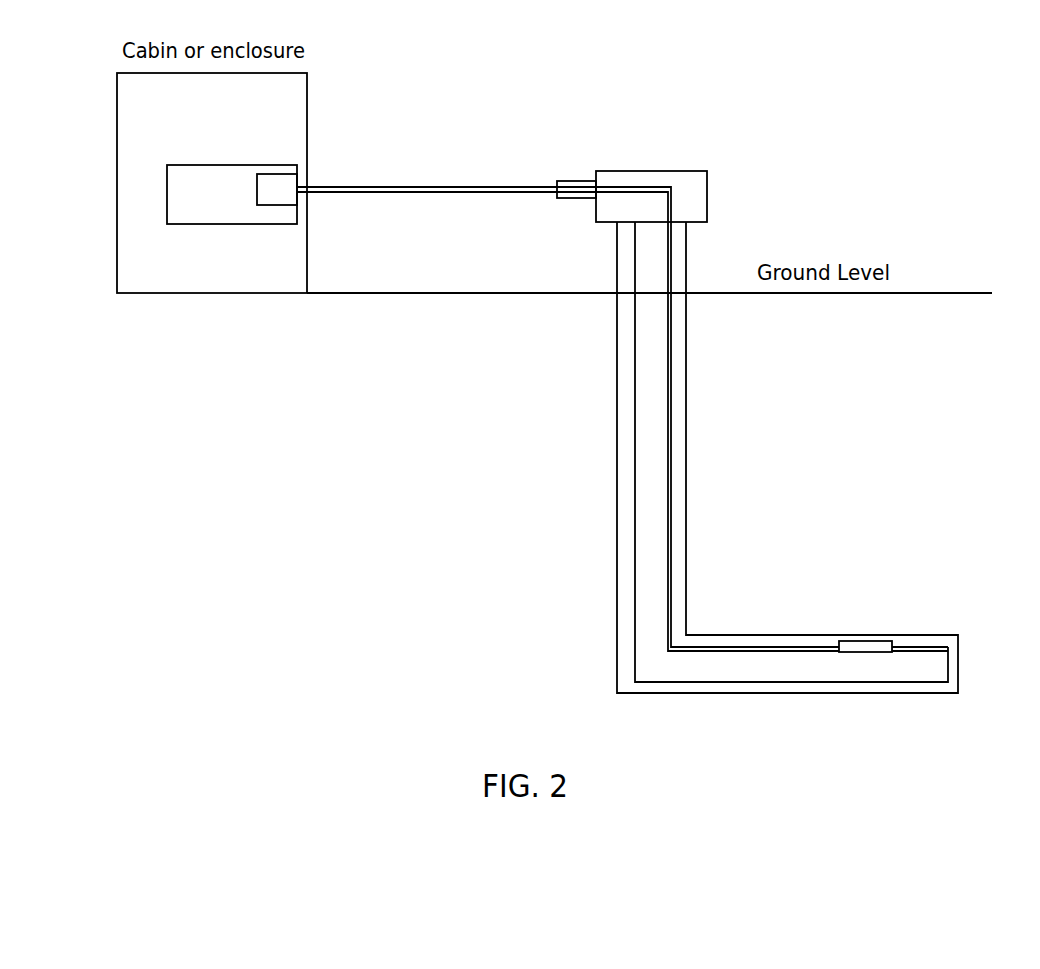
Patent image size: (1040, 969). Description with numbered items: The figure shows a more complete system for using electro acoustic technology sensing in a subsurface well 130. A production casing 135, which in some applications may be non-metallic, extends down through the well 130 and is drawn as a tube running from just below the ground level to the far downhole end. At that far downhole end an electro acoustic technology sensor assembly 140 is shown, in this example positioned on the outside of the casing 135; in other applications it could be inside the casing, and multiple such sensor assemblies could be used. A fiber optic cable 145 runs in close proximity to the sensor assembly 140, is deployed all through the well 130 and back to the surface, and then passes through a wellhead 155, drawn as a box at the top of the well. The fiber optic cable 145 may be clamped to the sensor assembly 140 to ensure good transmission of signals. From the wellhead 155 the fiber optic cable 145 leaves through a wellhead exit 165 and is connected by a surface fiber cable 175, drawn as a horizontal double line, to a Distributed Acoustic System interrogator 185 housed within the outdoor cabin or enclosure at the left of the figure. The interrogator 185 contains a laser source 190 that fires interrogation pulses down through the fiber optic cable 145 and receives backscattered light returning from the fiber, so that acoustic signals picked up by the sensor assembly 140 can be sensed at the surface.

The subsurface well 130 is at (617, 400).
The production casing 135 is at (642, 532).
The electro acoustic technology sensor assembly 140 is at (867, 641).
The fiber optic cable 145 is at (673, 433).
The wellhead 155 is at (708, 180).
The wellhead exit 165 is at (577, 180).
The surface fiber cable 175 is at (413, 187).
The Distributed Acoustic System interrogator 185 is at (192, 224).
The laser source 190 is at (277, 205).